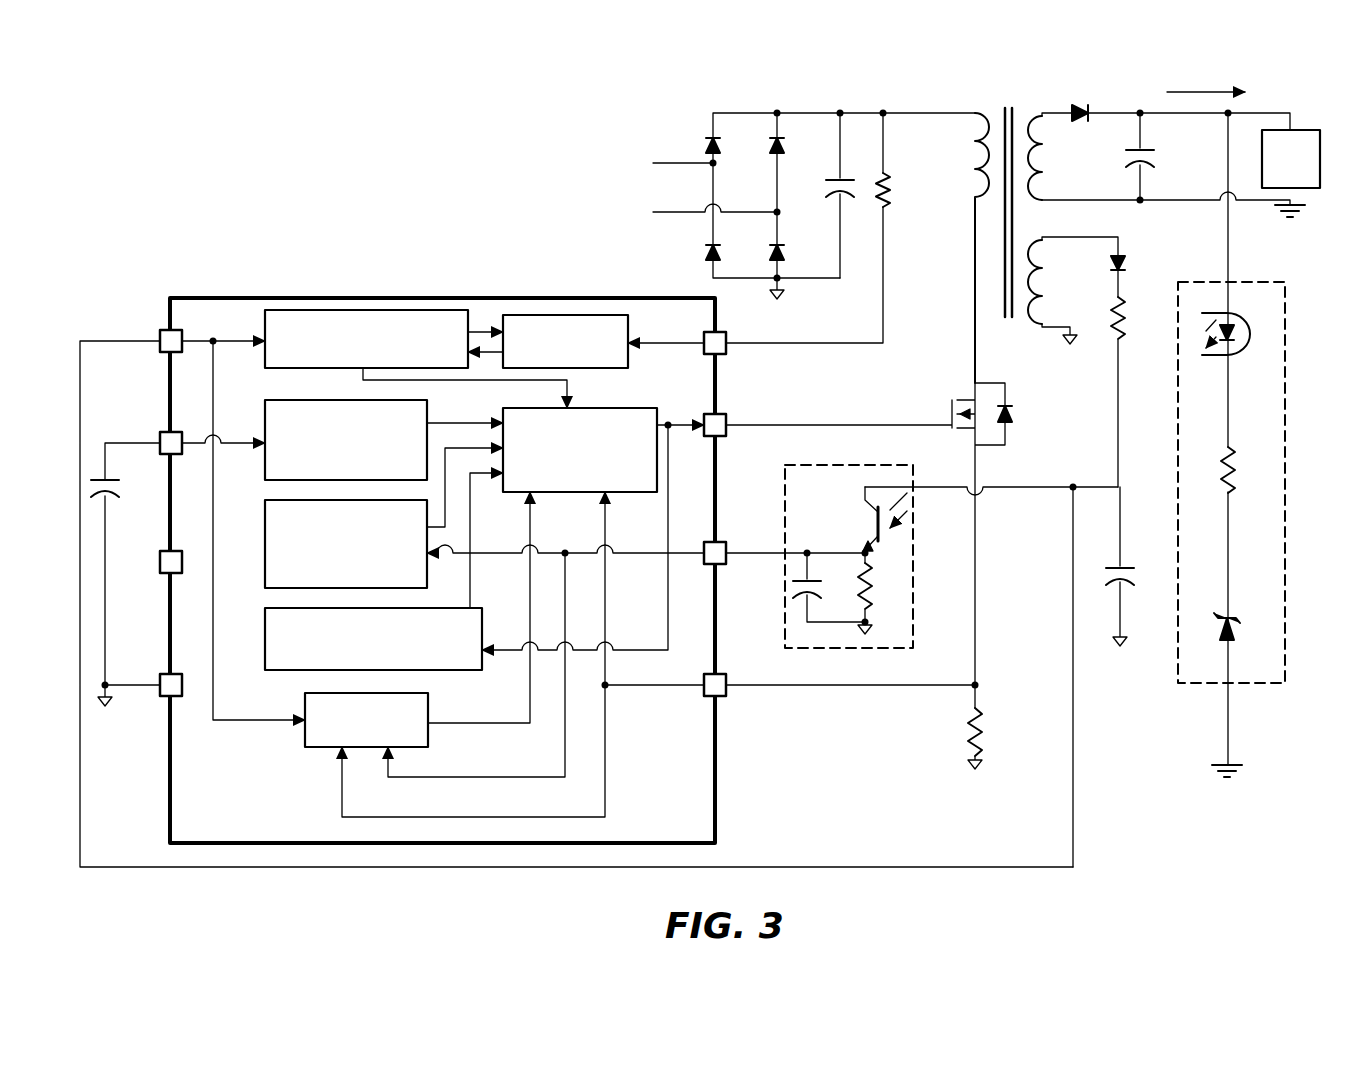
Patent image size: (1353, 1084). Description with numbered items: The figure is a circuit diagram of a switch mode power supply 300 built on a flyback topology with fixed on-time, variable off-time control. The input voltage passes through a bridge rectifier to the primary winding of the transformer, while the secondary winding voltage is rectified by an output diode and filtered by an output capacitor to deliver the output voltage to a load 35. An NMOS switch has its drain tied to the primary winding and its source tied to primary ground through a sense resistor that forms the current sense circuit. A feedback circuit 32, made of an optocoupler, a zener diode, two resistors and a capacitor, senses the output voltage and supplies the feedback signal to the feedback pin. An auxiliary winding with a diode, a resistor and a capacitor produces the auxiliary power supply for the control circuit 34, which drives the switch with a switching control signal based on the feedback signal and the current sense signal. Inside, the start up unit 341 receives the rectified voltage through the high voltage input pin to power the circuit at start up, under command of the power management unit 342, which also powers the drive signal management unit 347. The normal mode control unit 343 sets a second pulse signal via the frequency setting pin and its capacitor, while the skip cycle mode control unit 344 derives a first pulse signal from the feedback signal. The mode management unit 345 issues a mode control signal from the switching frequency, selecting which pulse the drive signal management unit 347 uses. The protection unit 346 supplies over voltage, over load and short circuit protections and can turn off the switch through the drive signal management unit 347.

The switch mode power supply 300 is at (157, 131).
The control circuit 34 is at (378, 298).
The start up unit 341 is at (628, 316).
The power management unit 342 is at (282, 378).
The normal mode control unit 343 is at (282, 490).
The skip cycle mode control unit 344 is at (282, 598).
The mode management unit 345 is at (282, 680).
The protection unit 346 is at (305, 747).
The drive signal management unit 347 is at (607, 408).
The load 35 is at (1318, 118).
The feedback circuit 32 is at (913, 588).